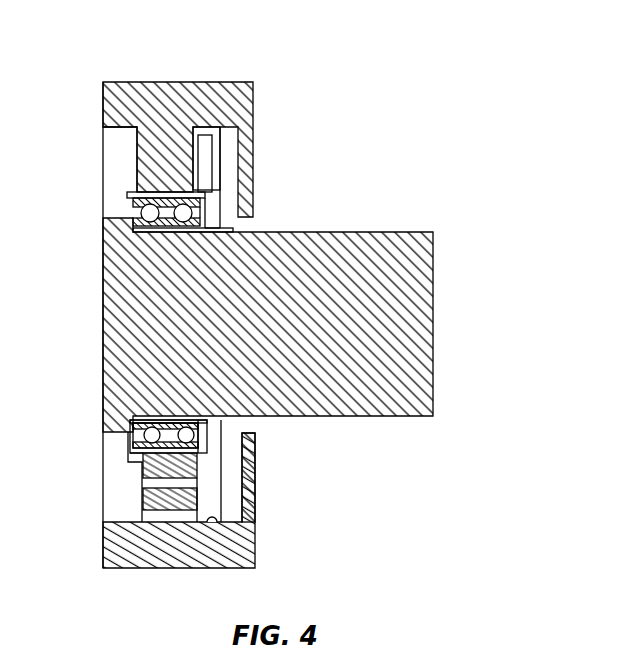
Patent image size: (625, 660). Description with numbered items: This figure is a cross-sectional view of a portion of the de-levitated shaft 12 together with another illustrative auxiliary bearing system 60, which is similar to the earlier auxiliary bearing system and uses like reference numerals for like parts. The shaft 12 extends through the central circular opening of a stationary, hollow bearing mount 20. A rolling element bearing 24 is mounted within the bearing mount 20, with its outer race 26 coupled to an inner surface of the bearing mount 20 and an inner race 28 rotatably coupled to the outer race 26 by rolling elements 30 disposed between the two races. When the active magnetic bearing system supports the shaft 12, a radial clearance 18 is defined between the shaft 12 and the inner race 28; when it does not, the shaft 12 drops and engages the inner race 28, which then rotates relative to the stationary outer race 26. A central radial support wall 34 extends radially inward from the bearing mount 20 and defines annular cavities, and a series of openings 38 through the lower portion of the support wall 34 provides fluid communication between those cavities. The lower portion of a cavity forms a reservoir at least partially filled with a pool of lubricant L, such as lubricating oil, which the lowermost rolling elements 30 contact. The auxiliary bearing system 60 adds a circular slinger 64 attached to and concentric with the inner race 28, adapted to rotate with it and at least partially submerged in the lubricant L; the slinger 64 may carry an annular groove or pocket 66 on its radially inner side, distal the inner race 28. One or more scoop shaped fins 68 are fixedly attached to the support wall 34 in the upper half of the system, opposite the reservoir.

The auxiliary bearing system 60 is at (474, 63).
The bearing mount 20 is at (175, 82).
The central radial support wall 34 is at (153, 167).
The scoop shaped fins 68 is at (205, 160).
The rolling element bearing 24 is at (131, 212).
The radial clearance 18 is at (172, 233).
The shaft 12 is at (434, 317).
The rolling elements 30 is at (137, 435).
The inner race 28 is at (147, 420).
The outer race 26 is at (130, 445).
The openings 38 is at (143, 517).
The circular slinger 64 is at (212, 468).
The lubricant L is at (232, 502).
The annular groove or pocket 66 is at (211, 524).